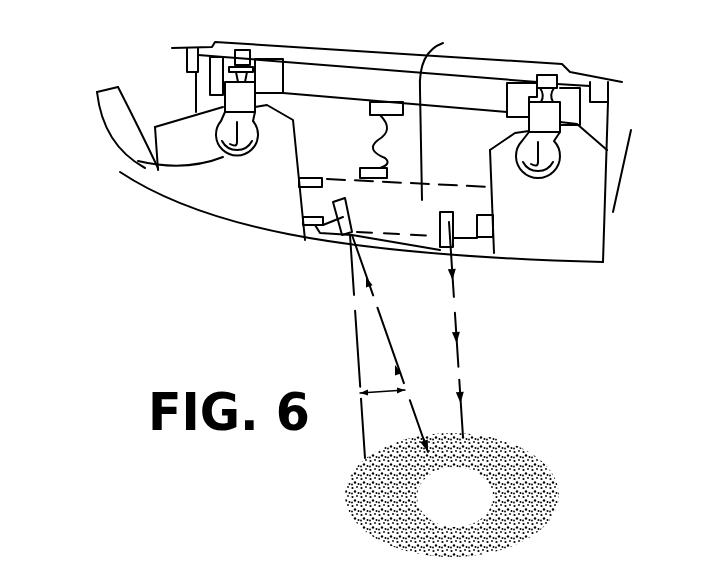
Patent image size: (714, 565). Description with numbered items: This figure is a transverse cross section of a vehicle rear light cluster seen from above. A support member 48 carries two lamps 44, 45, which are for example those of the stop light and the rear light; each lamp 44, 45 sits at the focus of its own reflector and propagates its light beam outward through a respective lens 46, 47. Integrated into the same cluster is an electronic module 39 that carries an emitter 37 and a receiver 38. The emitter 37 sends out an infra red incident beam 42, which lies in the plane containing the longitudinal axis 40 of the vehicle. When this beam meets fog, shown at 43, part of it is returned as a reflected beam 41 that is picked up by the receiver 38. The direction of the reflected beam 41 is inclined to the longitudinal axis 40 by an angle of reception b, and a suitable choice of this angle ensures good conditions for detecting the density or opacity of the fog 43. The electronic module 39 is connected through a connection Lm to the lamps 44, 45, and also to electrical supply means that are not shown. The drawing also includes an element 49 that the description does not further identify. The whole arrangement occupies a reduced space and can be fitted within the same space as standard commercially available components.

The emitter 37 is at (438, 222).
The receiver 38 is at (307, 240).
The electronic module 39 is at (450, 113).
The longitudinal axis 40 is at (352, 298).
The reflected beam 41 is at (397, 362).
The incident beam 42 is at (457, 331).
The fog 43 is at (468, 508).
The lamp 44 is at (139, 160).
The lamp 45 is at (557, 176).
The lens 46 is at (217, 192).
The lens 47 is at (548, 245).
The support member 48 is at (312, 55).
The cover lens 49 is at (250, 228).
The connection Lm is at (378, 131).
The angle of reception b is at (382, 410).